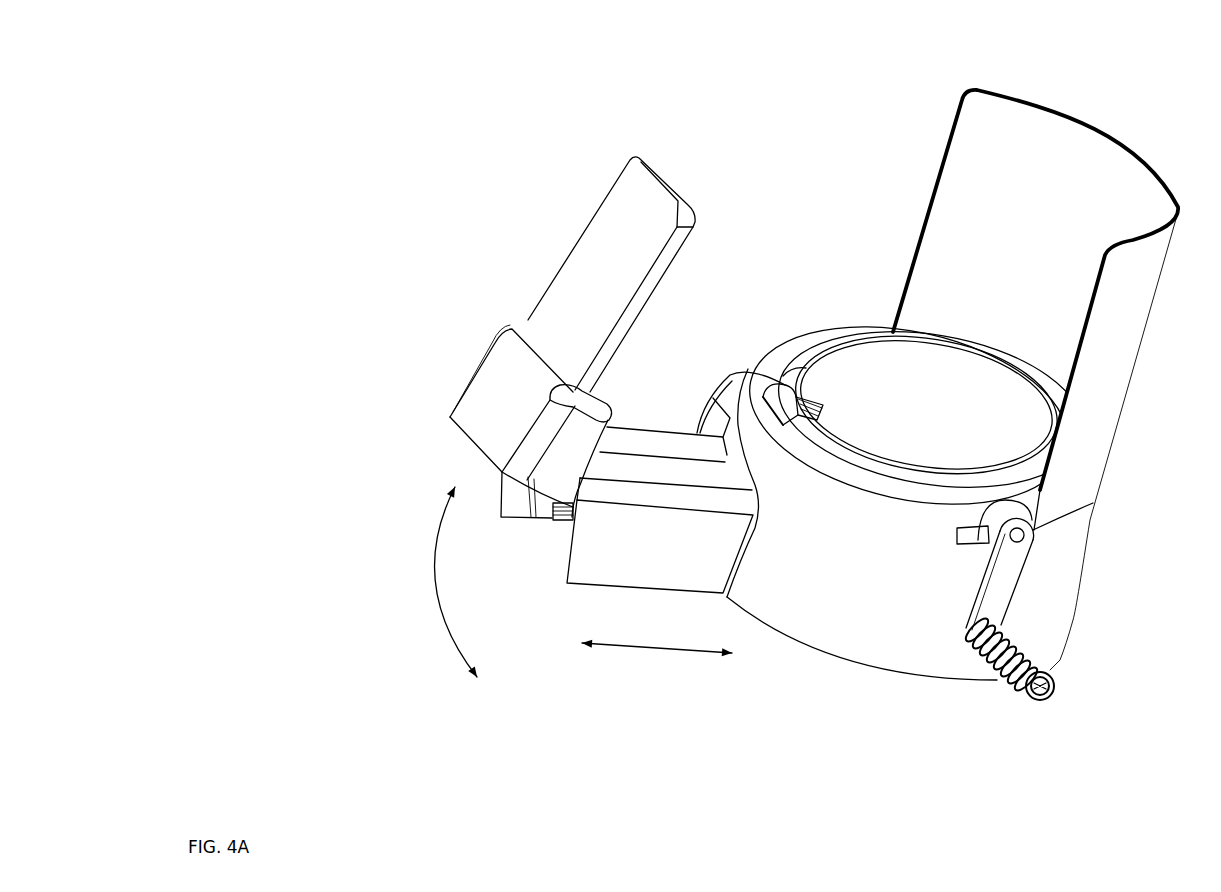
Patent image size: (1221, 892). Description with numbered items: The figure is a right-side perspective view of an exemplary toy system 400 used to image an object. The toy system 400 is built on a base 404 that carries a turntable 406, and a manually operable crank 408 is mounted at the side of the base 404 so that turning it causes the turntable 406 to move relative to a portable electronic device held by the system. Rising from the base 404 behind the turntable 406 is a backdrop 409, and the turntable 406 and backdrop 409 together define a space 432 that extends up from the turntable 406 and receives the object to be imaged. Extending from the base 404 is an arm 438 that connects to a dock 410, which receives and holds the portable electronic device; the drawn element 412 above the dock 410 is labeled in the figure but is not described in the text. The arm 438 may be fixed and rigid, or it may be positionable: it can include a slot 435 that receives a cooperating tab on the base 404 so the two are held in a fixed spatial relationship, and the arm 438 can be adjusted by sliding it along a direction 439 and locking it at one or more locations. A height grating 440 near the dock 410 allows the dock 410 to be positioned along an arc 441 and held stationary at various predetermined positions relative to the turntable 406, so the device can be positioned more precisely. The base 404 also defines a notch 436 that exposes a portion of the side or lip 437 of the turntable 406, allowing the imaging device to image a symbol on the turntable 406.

The toy system 400 is at (263, 41).
The base 404 is at (810, 630).
The turntable 406 is at (932, 403).
The manually operable crank 408 is at (1037, 700).
The backdrop 409 is at (1047, 107).
The dock 410 is at (492, 378).
The handle 412 is at (600, 223).
The space 432 is at (866, 153).
The slot 435 is at (676, 436).
The notch 436 is at (772, 399).
The lip 437 is at (800, 395).
The arm 438 is at (623, 567).
The direction 439 is at (657, 658).
The height grating 440 is at (553, 513).
The arc 441 is at (437, 582).